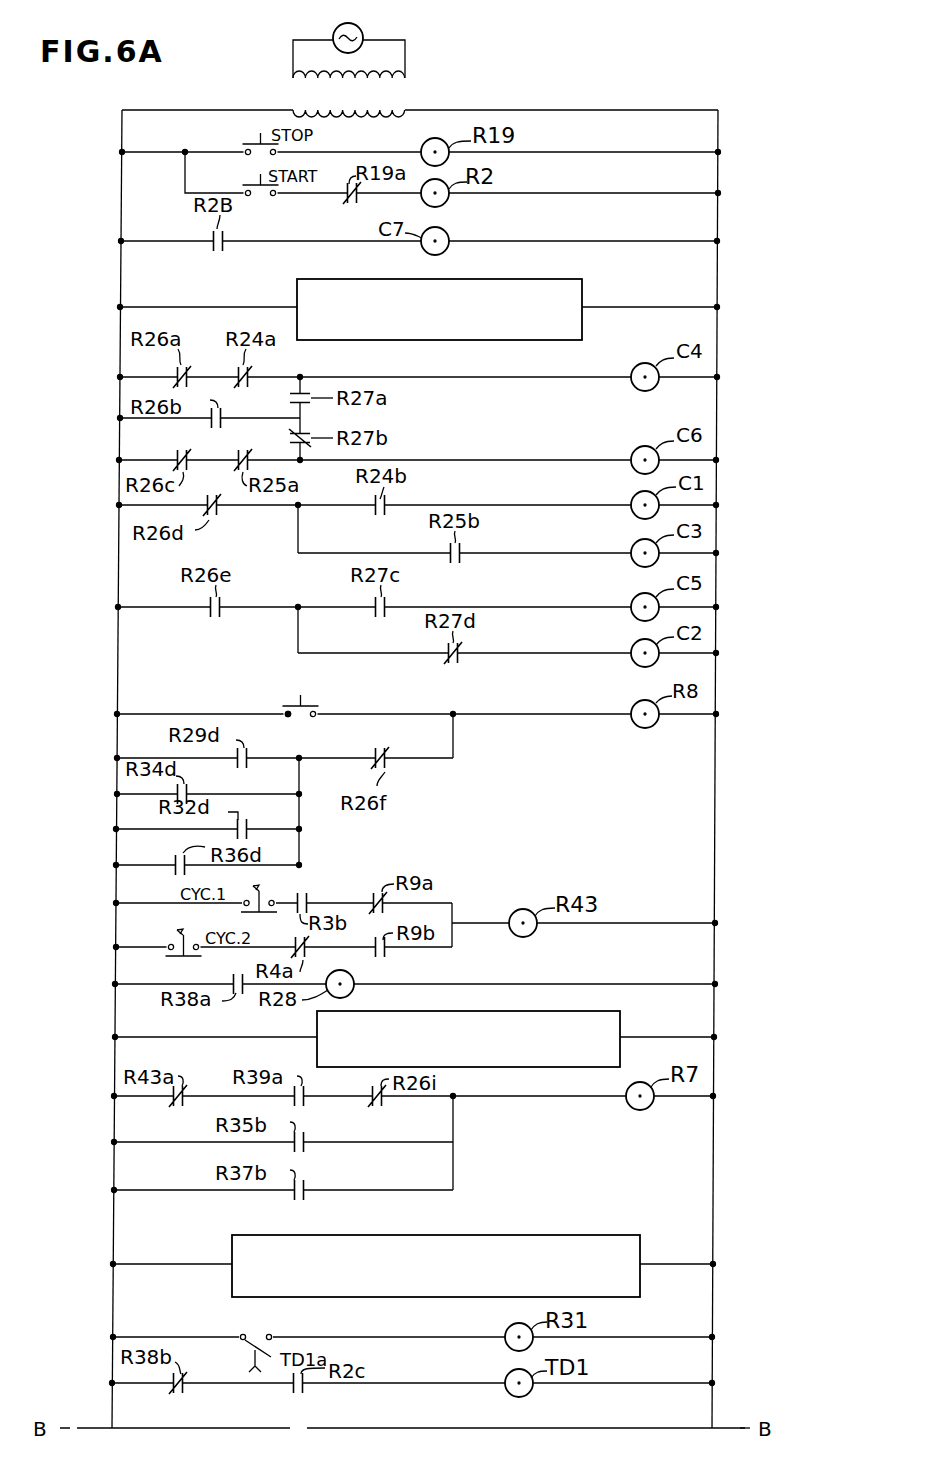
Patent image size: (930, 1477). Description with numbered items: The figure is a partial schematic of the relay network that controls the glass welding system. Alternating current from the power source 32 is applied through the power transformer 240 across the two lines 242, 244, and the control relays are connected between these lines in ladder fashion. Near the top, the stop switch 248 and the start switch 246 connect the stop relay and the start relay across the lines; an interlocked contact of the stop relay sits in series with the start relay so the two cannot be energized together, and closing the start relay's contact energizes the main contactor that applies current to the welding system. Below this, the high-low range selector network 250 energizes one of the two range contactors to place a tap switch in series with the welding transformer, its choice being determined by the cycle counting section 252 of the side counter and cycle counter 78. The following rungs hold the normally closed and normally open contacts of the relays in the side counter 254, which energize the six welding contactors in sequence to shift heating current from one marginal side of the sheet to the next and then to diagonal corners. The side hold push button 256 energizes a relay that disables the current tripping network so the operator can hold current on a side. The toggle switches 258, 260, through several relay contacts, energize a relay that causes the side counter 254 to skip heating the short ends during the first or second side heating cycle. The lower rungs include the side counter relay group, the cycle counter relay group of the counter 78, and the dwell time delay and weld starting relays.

The power source 32 is at (361, 32).
The power transformer 240 is at (400, 97).
The line 242 is at (120, 145).
The line 244 is at (720, 148).
The start switch 246 is at (257, 182).
The stop switch 248 is at (255, 141).
The network 250 is at (497, 278).
The cycle counting section 252 is at (452, 1235).
The side counter 254 is at (622, 1056).
The side hold push button 256 is at (283, 696).
The toggle switch 258 is at (262, 890).
The toggle switch 260 is at (186, 933).
The side counter and cycle counter 78 is at (462, 1144).